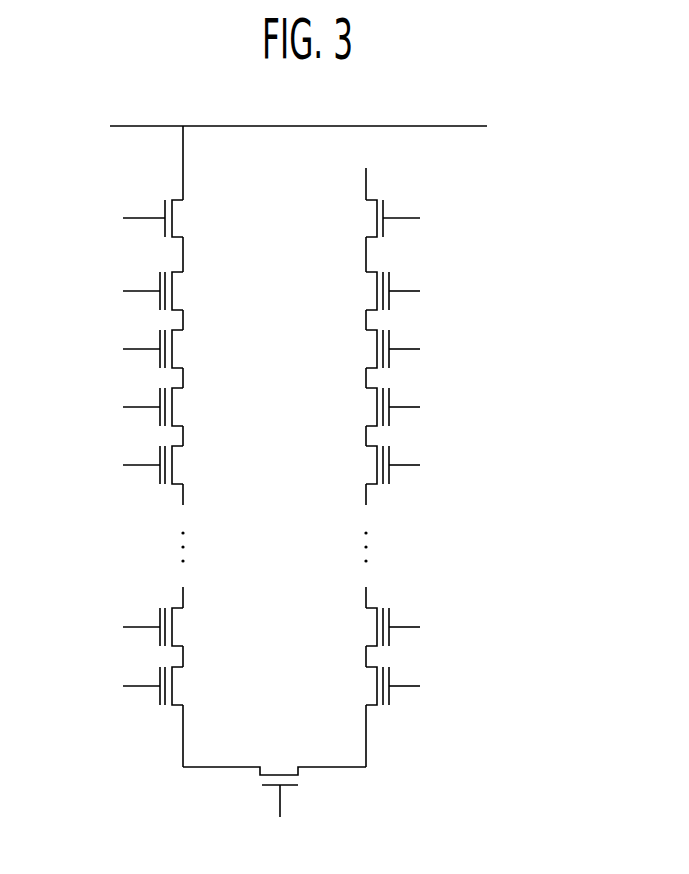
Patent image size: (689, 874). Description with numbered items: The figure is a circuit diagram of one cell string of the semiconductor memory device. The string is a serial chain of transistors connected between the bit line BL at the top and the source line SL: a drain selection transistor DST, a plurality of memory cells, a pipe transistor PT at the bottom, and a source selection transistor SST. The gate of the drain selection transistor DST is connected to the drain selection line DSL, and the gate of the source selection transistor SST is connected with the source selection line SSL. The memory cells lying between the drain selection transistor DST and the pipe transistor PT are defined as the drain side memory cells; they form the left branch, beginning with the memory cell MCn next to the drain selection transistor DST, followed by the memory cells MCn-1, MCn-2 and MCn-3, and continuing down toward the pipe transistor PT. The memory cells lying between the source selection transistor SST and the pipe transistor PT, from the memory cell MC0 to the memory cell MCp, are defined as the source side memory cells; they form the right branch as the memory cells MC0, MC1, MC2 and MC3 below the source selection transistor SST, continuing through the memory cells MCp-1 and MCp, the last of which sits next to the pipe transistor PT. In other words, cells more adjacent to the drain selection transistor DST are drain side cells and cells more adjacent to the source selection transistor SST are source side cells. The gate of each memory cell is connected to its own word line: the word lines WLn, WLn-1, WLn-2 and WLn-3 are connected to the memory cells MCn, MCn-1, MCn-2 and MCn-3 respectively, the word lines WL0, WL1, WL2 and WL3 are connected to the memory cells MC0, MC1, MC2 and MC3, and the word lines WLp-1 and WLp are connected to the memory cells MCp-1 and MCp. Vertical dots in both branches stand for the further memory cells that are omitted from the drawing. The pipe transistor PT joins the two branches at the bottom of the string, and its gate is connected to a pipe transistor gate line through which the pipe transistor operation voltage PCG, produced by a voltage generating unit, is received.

The bit line BL is at (314, 126).
The source line SL is at (366, 169).
The drain selection transistor DST is at (190, 218).
The drain selection line DSL is at (126, 219).
The source selection transistor SST is at (357, 218).
The source selection line SSL is at (420, 219).
The memory cell MCn is at (190, 291).
The word line WLn is at (122, 292).
The memory cell MC0 is at (358, 291).
The word line WL0 is at (425, 292).
The memory cell MCn-1 is at (201, 349).
The word line WLn-1 is at (110, 350).
The memory cell MC1 is at (358, 349).
The word line WL1 is at (424, 350).
The memory cell MCn-2 is at (201, 407).
The word line WLn-2 is at (109, 408).
The memory cell MC2 is at (358, 407).
The word line WL2 is at (425, 408).
The memory cell MCn-3 is at (201, 465).
The word line WLn-3 is at (109, 466).
The memory cell MC3 is at (358, 465).
The word line WL3 is at (425, 466).
The memory cell MCp-1 is at (347, 627).
The word line WLp-1 is at (437, 628).
The memory cell MCp is at (358, 686).
The word line WLp is at (424, 687).
The pipe transistor PT is at (274, 760).
The pipe transistor operation voltage PCG is at (274, 816).